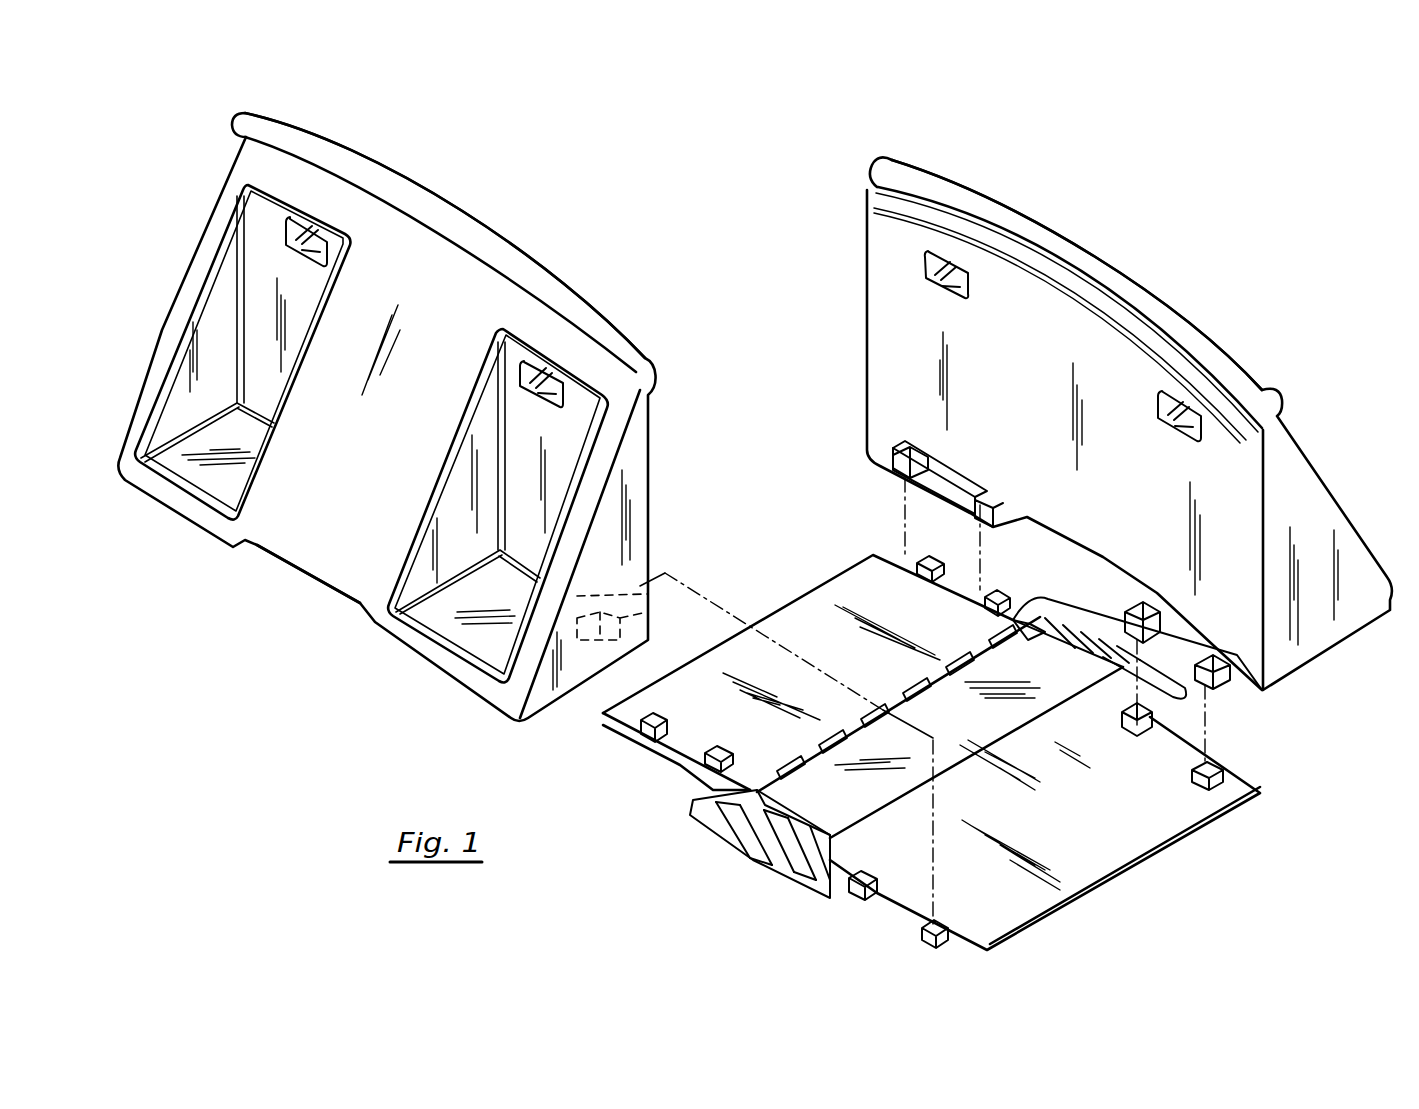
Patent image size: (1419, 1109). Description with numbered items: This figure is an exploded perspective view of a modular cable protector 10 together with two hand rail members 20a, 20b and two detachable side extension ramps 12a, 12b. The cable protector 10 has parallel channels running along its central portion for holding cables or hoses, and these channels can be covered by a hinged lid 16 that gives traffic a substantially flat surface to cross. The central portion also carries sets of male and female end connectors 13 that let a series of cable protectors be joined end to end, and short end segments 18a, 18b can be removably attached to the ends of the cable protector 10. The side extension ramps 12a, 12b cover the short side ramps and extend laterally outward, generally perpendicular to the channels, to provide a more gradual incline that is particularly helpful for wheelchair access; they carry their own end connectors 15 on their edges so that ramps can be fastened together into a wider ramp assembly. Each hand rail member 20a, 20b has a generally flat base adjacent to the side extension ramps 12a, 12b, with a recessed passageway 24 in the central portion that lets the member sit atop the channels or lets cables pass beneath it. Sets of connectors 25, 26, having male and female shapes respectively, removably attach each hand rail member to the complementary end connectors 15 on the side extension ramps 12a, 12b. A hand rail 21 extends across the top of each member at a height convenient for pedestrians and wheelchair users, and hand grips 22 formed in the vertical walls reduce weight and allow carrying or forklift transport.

The cable protector 10 is at (832, 548).
The side extension ramp 12a is at (790, 630).
The side extension ramp 12b is at (1120, 833).
The end connector 13 is at (1030, 620).
The end connector 15 is at (705, 764).
The hinged lid 16 is at (975, 735).
The end segment 18a is at (770, 855).
The end segment 18b is at (1100, 630).
The hand rail member 20a is at (185, 236).
The hand rail member 20b is at (1218, 294).
The hand rail 21 is at (398, 172).
The hand grip 22 is at (508, 356).
The recessed passageway 24 is at (294, 572).
The connector 25 is at (1210, 655).
The connector 26 is at (977, 505).